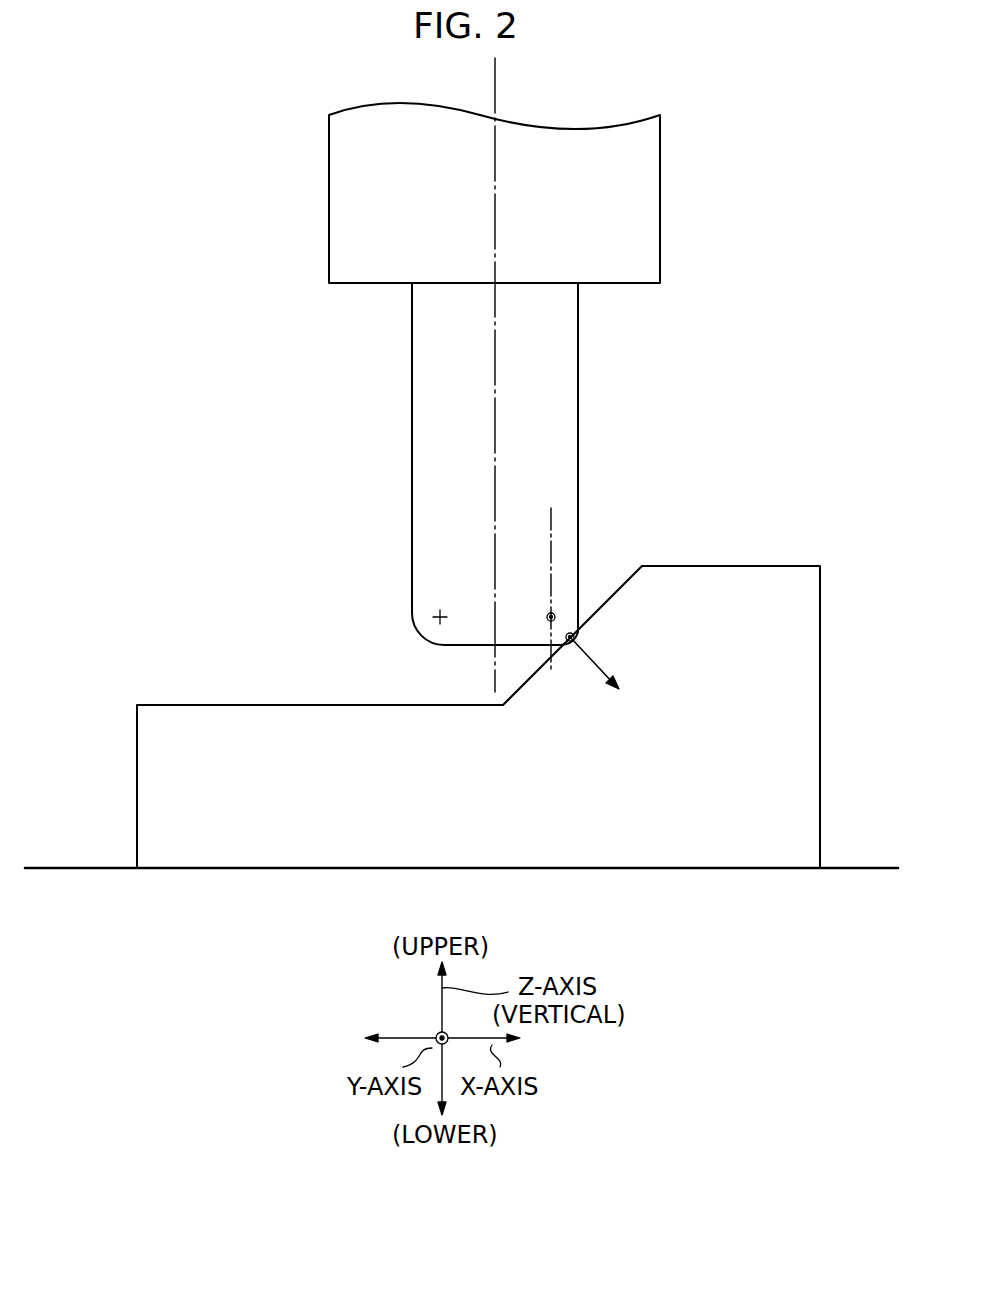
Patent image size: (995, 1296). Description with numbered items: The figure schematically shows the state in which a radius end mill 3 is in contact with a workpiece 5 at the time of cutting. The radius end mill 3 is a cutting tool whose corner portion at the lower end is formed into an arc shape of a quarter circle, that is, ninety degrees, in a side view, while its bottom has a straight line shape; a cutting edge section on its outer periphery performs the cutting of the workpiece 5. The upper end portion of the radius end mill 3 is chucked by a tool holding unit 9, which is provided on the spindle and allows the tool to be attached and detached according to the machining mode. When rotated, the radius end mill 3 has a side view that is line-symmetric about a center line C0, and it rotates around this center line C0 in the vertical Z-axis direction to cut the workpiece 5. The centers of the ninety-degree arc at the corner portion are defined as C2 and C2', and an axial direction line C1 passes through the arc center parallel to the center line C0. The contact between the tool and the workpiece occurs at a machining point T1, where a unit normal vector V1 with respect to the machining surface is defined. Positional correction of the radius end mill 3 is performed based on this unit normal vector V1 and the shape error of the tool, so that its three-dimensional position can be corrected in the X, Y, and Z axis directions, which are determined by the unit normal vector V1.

The center line C0 is at (495, 90).
The tool holding unit 9 is at (633, 283).
The radius end mill 3 is at (579, 442).
The axial direction line C1 is at (547, 528).
The arc center of corner portion C2 is at (531, 593).
The arc center of corner portion C2' is at (455, 584).
The machining point T1 is at (567, 645).
The unit normal vector V1 is at (593, 655).
The workpiece 5 is at (820, 644).